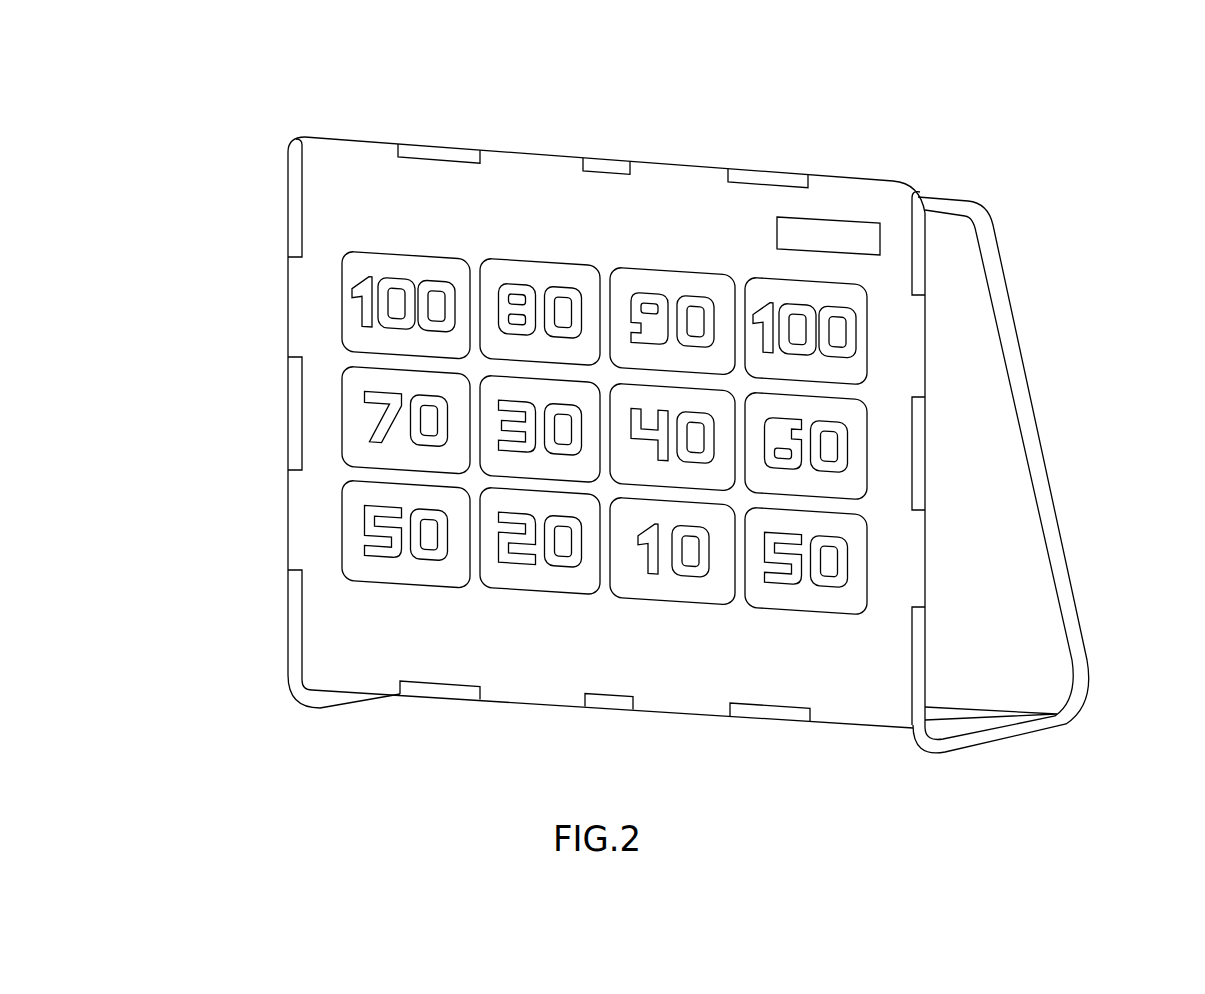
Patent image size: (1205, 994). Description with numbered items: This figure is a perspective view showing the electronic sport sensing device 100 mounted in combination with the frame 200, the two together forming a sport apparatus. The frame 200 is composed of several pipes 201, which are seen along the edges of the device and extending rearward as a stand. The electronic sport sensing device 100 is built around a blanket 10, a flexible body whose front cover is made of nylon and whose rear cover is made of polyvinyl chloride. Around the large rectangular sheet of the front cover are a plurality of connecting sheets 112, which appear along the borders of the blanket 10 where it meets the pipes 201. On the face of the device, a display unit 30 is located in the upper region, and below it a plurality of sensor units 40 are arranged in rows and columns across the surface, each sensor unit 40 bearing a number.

The electronic sport sensing device 100 is at (925, 352).
The blanket 10 is at (337, 636).
The connecting sheets 112 is at (670, 175).
The display unit 30 is at (829, 218).
The sensor units 40 is at (357, 309).
The frame 200 is at (1037, 433).
The pipes 201 is at (768, 174).